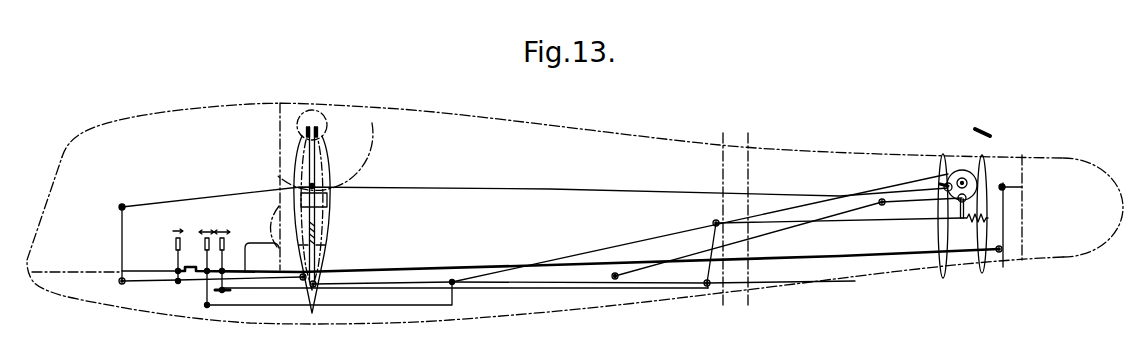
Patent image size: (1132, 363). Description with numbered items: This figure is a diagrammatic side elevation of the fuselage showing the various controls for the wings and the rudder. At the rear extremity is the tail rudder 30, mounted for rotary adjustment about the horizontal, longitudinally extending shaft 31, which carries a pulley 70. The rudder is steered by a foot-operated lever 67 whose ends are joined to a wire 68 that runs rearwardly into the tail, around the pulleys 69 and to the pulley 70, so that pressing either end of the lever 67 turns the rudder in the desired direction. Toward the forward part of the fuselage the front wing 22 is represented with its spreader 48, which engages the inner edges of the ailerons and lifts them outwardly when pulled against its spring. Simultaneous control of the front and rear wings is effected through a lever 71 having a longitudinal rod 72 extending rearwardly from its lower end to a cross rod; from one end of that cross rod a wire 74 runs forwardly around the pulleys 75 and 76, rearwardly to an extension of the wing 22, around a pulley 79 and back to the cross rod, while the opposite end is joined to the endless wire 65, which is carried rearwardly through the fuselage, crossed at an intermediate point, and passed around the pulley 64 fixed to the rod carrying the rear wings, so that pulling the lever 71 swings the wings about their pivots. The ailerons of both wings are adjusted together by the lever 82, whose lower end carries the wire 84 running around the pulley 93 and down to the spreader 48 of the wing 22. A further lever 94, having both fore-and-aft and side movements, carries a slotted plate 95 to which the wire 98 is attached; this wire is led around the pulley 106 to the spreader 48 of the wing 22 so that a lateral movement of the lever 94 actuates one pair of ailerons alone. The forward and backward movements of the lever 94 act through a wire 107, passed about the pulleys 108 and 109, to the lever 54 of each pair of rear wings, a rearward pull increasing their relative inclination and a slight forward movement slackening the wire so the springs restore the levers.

The front wing 22 is at (331, 144).
The tail rudder 30 is at (1064, 158).
The shaft 31 is at (1004, 183).
The spreader 48 is at (328, 204).
The lever 54 is at (961, 220).
The pulley 64 is at (963, 170).
The wire 65 is at (491, 189).
The foot-operated lever 67 is at (186, 266).
The wire 68 is at (836, 256).
The pulleys 69 is at (1000, 252).
The pulley 70 is at (1002, 184).
The lever 71 is at (206, 297).
The longitudinal rod 72 is at (373, 306).
The wire 74 is at (707, 228).
The pulley 75 is at (119, 281).
The pulley 76 is at (120, 206).
The pulley 79 is at (883, 206).
The lever 82 is at (176, 257).
The wire 84 is at (330, 157).
The pulley 93 is at (316, 128).
The lever 94 is at (223, 264).
The slotted plate 95 is at (222, 293).
The wire 98 is at (312, 156).
The pulley 106 is at (298, 129).
The wire 107 is at (518, 290).
The pulley 108 is at (707, 287).
The pulley 109 is at (713, 221).